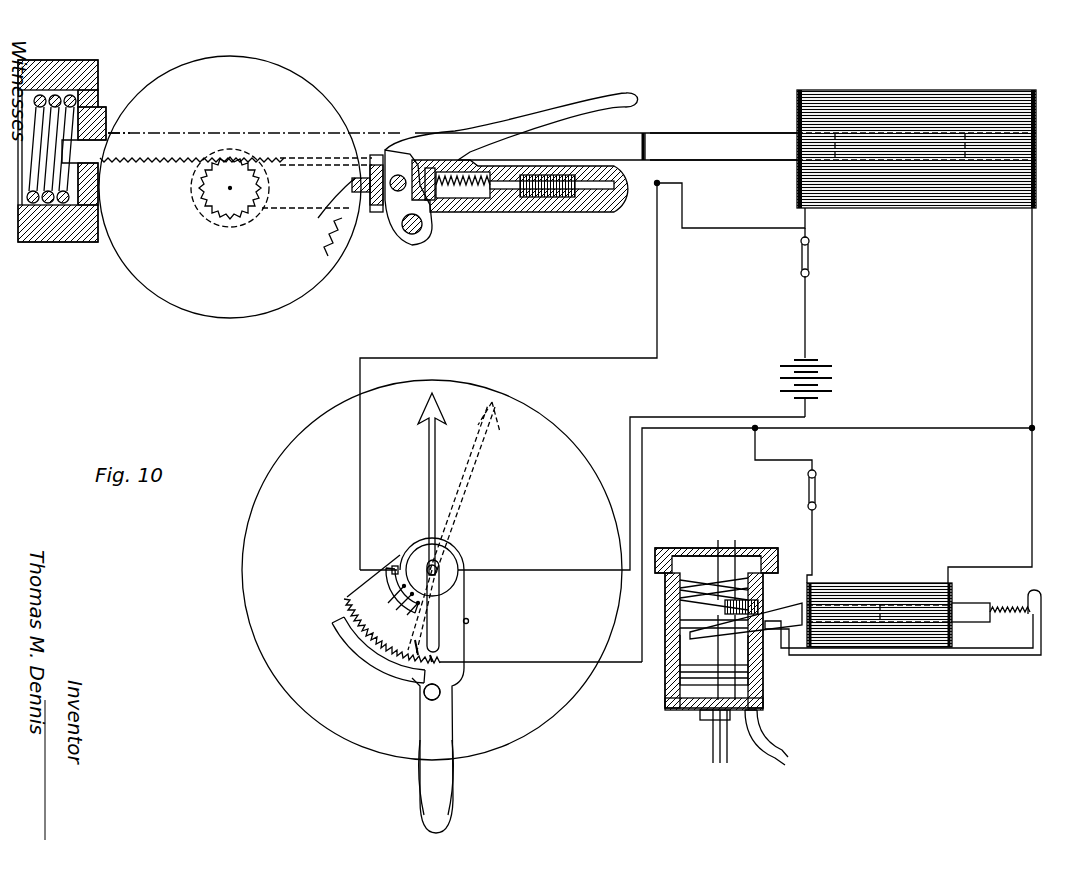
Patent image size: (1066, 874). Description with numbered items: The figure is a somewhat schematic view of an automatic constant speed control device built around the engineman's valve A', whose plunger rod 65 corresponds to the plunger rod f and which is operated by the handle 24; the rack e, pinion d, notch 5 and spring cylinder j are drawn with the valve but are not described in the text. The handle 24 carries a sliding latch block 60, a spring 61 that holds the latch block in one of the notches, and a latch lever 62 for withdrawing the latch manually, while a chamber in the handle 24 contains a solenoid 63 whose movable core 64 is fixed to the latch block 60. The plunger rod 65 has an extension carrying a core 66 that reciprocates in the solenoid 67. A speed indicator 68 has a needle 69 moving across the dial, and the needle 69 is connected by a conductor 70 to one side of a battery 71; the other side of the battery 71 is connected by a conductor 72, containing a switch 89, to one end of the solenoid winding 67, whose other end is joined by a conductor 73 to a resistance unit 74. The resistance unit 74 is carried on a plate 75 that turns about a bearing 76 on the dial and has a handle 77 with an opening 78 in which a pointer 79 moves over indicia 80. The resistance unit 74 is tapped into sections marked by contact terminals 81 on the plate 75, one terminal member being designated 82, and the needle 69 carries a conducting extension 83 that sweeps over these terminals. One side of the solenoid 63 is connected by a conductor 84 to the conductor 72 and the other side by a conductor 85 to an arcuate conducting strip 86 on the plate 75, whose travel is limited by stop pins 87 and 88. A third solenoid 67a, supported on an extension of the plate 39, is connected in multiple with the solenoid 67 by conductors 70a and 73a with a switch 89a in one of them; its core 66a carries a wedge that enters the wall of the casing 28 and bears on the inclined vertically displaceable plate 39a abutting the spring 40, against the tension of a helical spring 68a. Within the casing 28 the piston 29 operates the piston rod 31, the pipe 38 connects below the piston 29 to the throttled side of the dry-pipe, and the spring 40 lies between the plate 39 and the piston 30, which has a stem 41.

The engineman's valve A' is at (230, 187).
The plunger rod f is at (160, 133).
The rack e is at (165, 165).
The pinion d is at (224, 226).
The spring cylinder j is at (55, 222).
The disc notch 5 is at (330, 209).
The sliding latch block 60 is at (378, 140).
The spring 61 is at (455, 222).
The latch lever 62 is at (520, 98).
The solenoid 63 is at (548, 212).
The movable core 64 is at (508, 212).
The plunger rod 65 is at (562, 133).
The core 66 is at (712, 133).
The solenoid 67 is at (928, 80).
The handle 24 is at (598, 212).
The conductor 84 is at (682, 200).
The conductor 85 is at (657, 277).
The switch 89 is at (810, 262).
The conductor 72 is at (805, 315).
The source of electrical energy 71 is at (818, 370).
The conductor 70 is at (670, 417).
The conductor 73 is at (672, 432).
The conductor 73a is at (1032, 505).
The conductor 70a is at (812, 525).
The switch 89a is at (816, 486).
The third solenoid 67a is at (880, 583).
The core 66a is at (858, 625).
The helical spring 68a is at (1020, 606).
The piston 30 is at (752, 548).
The spring 40 is at (690, 548).
The stem 41 is at (722, 540).
The casing 28 is at (758, 606).
The plate 39 is at (770, 640).
The vertically displaceable plate 39a is at (668, 630).
The piston 29 is at (680, 680).
The piston rod 31 is at (713, 748).
The pipe 38 is at (775, 748).
The speed indicator 68 is at (285, 452).
The needle 69 is at (427, 450).
The limit stop pin 88 is at (394, 500).
The bearing 76 is at (452, 552).
The plate 75 is at (466, 610).
The handle 77 is at (449, 795).
The extension 83 is at (440, 637).
The limit stop pin 87 is at (469, 621).
The terminal member 82 is at (420, 632).
The arcuate conducting strip 86 is at (390, 562).
The contact terminal 81 is at (373, 578).
The opening 78 is at (420, 690).
The indicia 80 is at (360, 665).
The pointer 79 is at (438, 697).
The resistance unit 74 is at (440, 652).